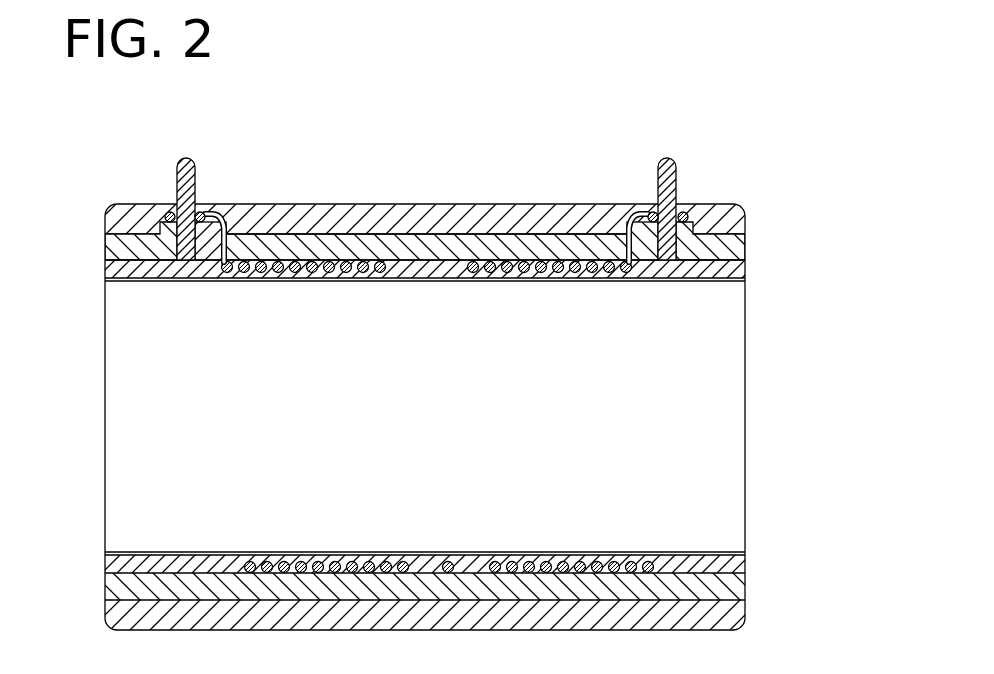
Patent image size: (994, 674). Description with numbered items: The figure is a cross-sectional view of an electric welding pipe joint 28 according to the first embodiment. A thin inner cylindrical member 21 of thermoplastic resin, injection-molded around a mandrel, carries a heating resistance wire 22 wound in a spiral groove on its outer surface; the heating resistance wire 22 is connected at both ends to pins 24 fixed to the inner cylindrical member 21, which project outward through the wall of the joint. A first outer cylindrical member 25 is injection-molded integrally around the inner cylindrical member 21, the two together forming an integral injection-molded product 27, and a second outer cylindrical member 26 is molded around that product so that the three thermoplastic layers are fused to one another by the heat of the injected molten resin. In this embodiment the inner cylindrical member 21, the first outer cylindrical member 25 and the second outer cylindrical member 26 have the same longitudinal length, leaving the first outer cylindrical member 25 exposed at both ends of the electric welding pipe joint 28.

The inner cylindrical member 21 is at (747, 271).
The heating resistance wire 22 is at (332, 283).
The pin 24 is at (197, 168).
The first outer cylindrical member 25 is at (747, 243).
The second outer cylindrical member 26 is at (568, 206).
The injection-molded product 27 is at (506, 373).
The electric welding pipe joint 28 is at (439, 178).